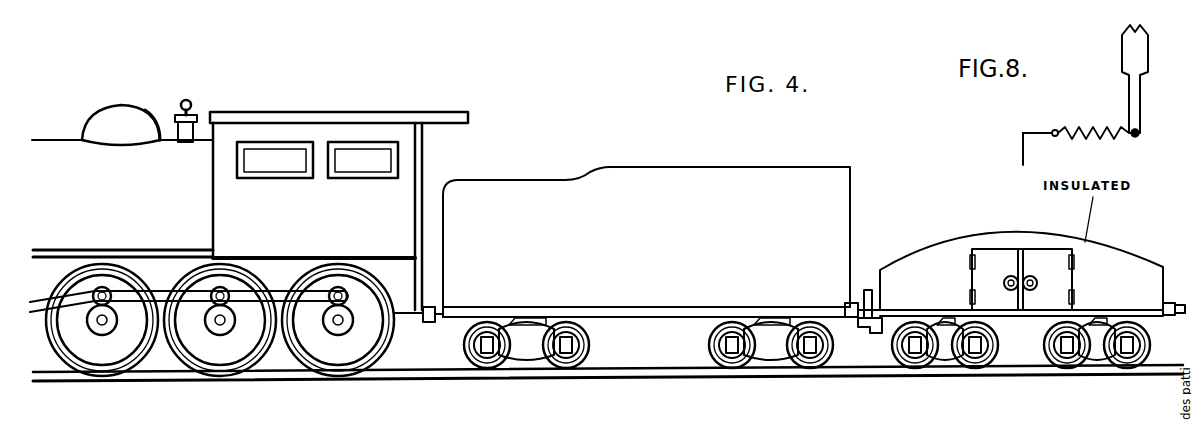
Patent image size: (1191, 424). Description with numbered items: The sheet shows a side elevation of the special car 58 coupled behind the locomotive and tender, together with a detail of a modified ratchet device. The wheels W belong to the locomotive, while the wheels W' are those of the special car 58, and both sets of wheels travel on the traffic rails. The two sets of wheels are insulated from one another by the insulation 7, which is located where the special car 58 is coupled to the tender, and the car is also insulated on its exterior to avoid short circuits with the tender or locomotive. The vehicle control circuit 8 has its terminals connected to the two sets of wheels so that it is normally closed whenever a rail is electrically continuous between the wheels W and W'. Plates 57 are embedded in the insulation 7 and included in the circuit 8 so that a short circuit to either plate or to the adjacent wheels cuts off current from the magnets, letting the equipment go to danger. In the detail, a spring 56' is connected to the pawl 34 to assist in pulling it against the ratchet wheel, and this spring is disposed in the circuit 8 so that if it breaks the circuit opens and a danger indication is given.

In FIG. 4, the wheels W is at (212, 344).
In FIG. 4, the wheels W' is at (1021, 367).
In FIG. 4, the insulation 7 is at (869, 297).
In FIG. 4, the plates 57 is at (882, 305).
In FIG. 4, the vehicle control circuit 8 is at (858, 378).
In FIG. 8, the vehicle control circuit 8 is at (1023, 132).
In FIG. 4, the special car 58 is at (940, 252).
In FIG. 8, the pawl 34 is at (1128, 50).
In FIG. 8, the spring 56' is at (1084, 113).